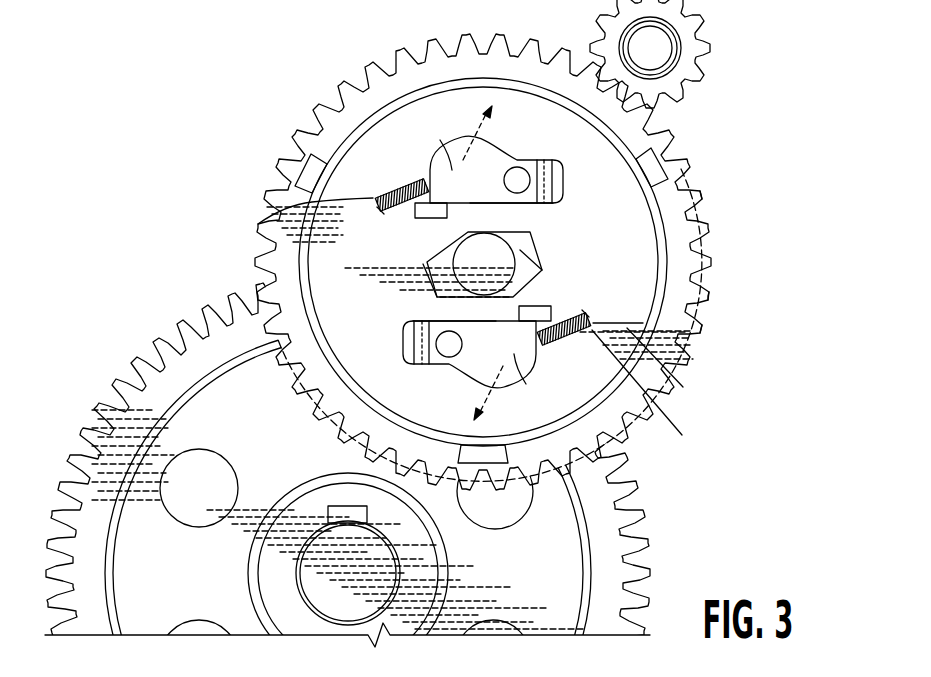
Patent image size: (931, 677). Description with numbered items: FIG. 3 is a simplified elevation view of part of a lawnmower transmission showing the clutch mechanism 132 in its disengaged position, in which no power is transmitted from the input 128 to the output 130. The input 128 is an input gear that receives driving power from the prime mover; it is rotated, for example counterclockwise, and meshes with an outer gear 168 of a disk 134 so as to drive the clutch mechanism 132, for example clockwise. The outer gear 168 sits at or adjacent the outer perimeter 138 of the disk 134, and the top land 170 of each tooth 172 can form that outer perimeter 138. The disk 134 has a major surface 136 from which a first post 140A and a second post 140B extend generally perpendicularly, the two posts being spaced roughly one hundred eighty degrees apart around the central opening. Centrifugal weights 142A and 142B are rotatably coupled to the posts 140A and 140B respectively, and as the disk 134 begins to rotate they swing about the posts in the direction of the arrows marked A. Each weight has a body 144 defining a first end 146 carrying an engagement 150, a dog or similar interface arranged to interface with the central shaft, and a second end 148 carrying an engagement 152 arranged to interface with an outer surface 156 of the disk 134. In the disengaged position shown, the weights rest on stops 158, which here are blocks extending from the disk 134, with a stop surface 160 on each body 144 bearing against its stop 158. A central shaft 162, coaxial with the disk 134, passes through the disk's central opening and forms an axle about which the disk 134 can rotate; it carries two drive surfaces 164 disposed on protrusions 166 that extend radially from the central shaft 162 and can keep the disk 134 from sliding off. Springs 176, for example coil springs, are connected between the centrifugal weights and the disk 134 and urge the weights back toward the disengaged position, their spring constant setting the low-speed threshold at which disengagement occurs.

The input 128 is at (698, 80).
The output 130 is at (147, 412).
The clutch mechanism 132 is at (748, 238).
The disk 134 is at (680, 372).
The major surface 136 is at (362, 253).
The outer perimeter 138 is at (268, 196).
The first post 140A is at (520, 178).
The second post 140B is at (450, 352).
The centrifugal weight 142A is at (452, 168).
The centrifugal weight 142B is at (530, 366).
The body 144 is at (450, 166).
The first end 146 is at (563, 186).
The second end 148 is at (418, 187).
The engagement 150 is at (548, 203).
The engagement 152 is at (395, 213).
The outer surface 156 is at (440, 90).
The stops 158 is at (430, 218).
The stop surface 160 is at (484, 208).
The central shaft 162 is at (513, 263).
The drive surfaces 164 is at (533, 232).
The protrusions 166 is at (520, 250).
The outer gear 168 is at (703, 203).
The top land 170 is at (725, 318).
The tooth 172 is at (707, 262).
The springs 176 is at (262, 220).